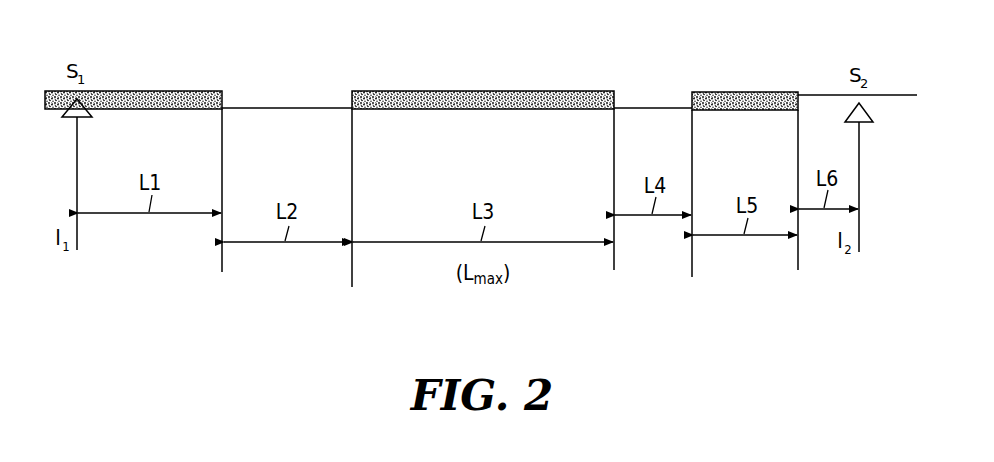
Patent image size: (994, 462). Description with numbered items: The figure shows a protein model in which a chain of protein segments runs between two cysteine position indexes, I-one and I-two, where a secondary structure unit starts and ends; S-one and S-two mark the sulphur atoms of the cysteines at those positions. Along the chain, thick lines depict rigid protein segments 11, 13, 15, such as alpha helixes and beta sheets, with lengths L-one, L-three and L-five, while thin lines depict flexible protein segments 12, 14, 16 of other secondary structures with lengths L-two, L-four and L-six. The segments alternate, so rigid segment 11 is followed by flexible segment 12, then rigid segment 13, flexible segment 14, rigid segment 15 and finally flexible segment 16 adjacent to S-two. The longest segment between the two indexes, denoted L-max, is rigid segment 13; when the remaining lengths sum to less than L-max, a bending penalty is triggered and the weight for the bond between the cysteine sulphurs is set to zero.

The rigid protein segment 11 is at (147, 91).
The flexible protein segment 12 is at (283, 107).
The rigid protein segment 13 is at (479, 92).
The flexible protein segment 14 is at (650, 107).
The rigid protein segment 15 is at (742, 93).
The flexible protein segment 16 is at (817, 95).